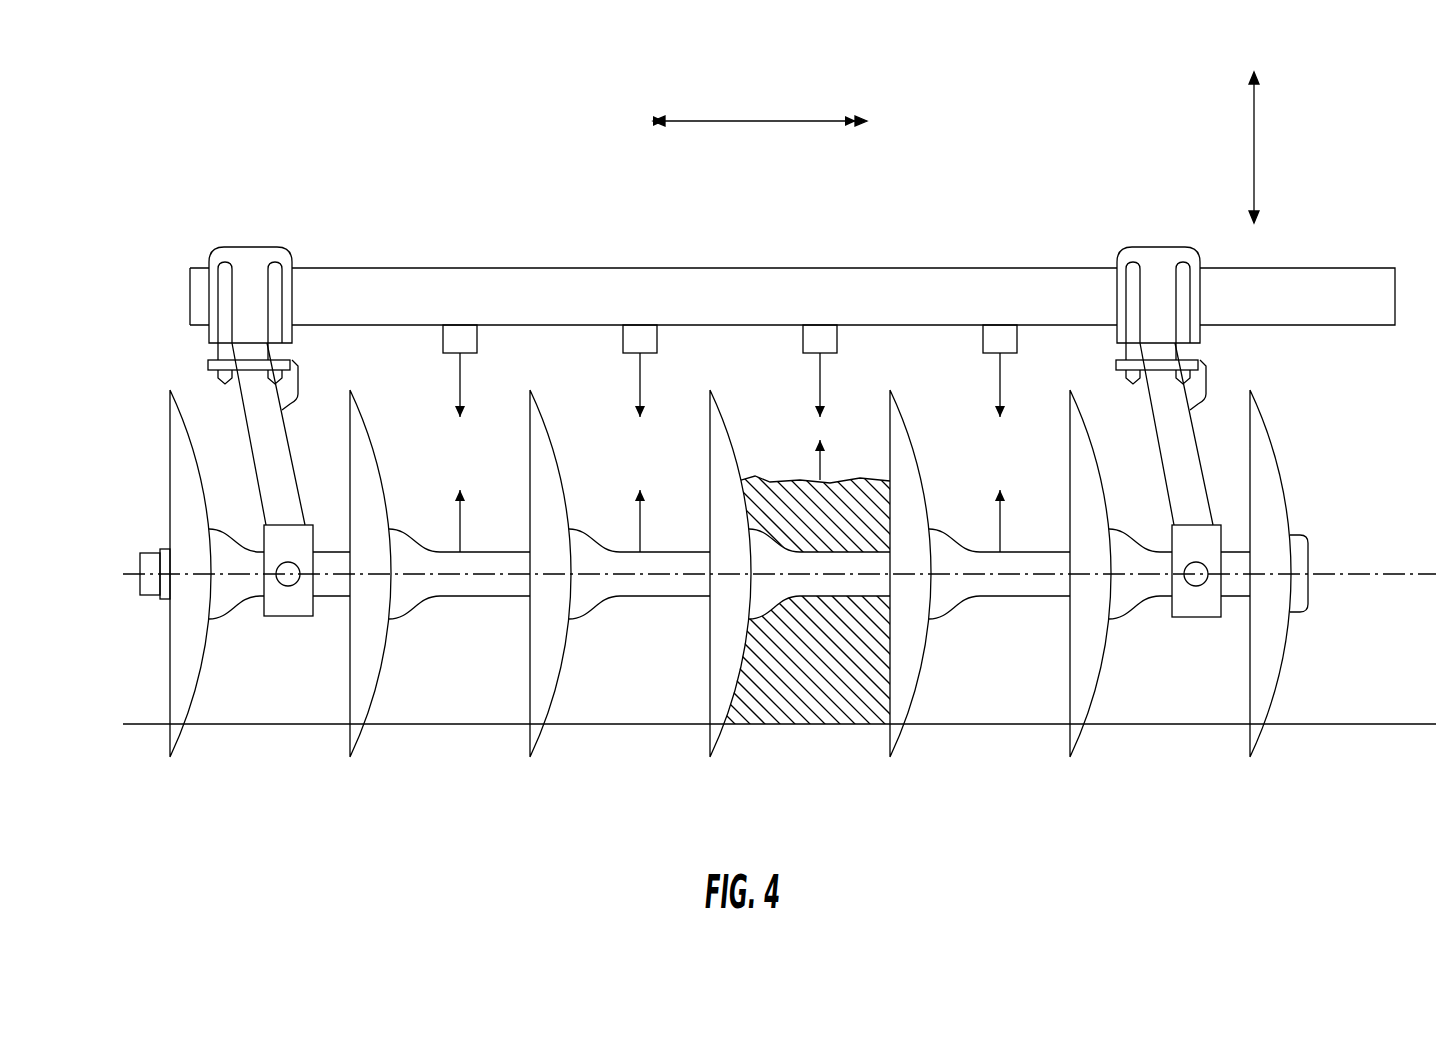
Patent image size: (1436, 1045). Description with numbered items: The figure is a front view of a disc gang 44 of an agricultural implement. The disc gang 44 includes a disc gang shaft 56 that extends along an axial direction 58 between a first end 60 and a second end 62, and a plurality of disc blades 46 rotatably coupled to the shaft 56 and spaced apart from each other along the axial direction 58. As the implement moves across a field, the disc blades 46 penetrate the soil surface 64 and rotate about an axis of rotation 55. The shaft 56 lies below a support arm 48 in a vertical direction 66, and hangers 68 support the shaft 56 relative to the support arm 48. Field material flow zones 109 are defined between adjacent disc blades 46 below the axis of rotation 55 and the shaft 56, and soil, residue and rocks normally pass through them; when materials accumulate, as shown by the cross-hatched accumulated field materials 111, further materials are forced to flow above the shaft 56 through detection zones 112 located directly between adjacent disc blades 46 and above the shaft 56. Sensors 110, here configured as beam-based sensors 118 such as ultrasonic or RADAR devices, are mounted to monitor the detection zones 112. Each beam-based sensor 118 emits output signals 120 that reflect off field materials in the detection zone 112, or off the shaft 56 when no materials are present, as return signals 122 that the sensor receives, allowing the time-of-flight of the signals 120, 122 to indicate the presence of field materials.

The disc gang 44 is at (253, 123).
The disc blades 46 is at (170, 757).
The support arm 48 is at (363, 268).
The axis of rotation 55 is at (1392, 574).
The disc gang shaft 56 is at (470, 596).
The axial direction 58 is at (747, 121).
The first end 60 is at (103, 567).
The second end 62 is at (1337, 557).
The soil surface 64 is at (1330, 722).
The vertical direction 66 is at (1254, 150).
The hangers 68 is at (248, 430).
The field material flow zones 109 is at (501, 703).
The sensors 110 is at (771, 281).
The accumulated field materials 111 is at (806, 623).
The detection zones 112 is at (430, 497).
The beam-based sensors 118 is at (462, 338).
The output signals 120 is at (457, 390).
The return signals 122 is at (461, 528).